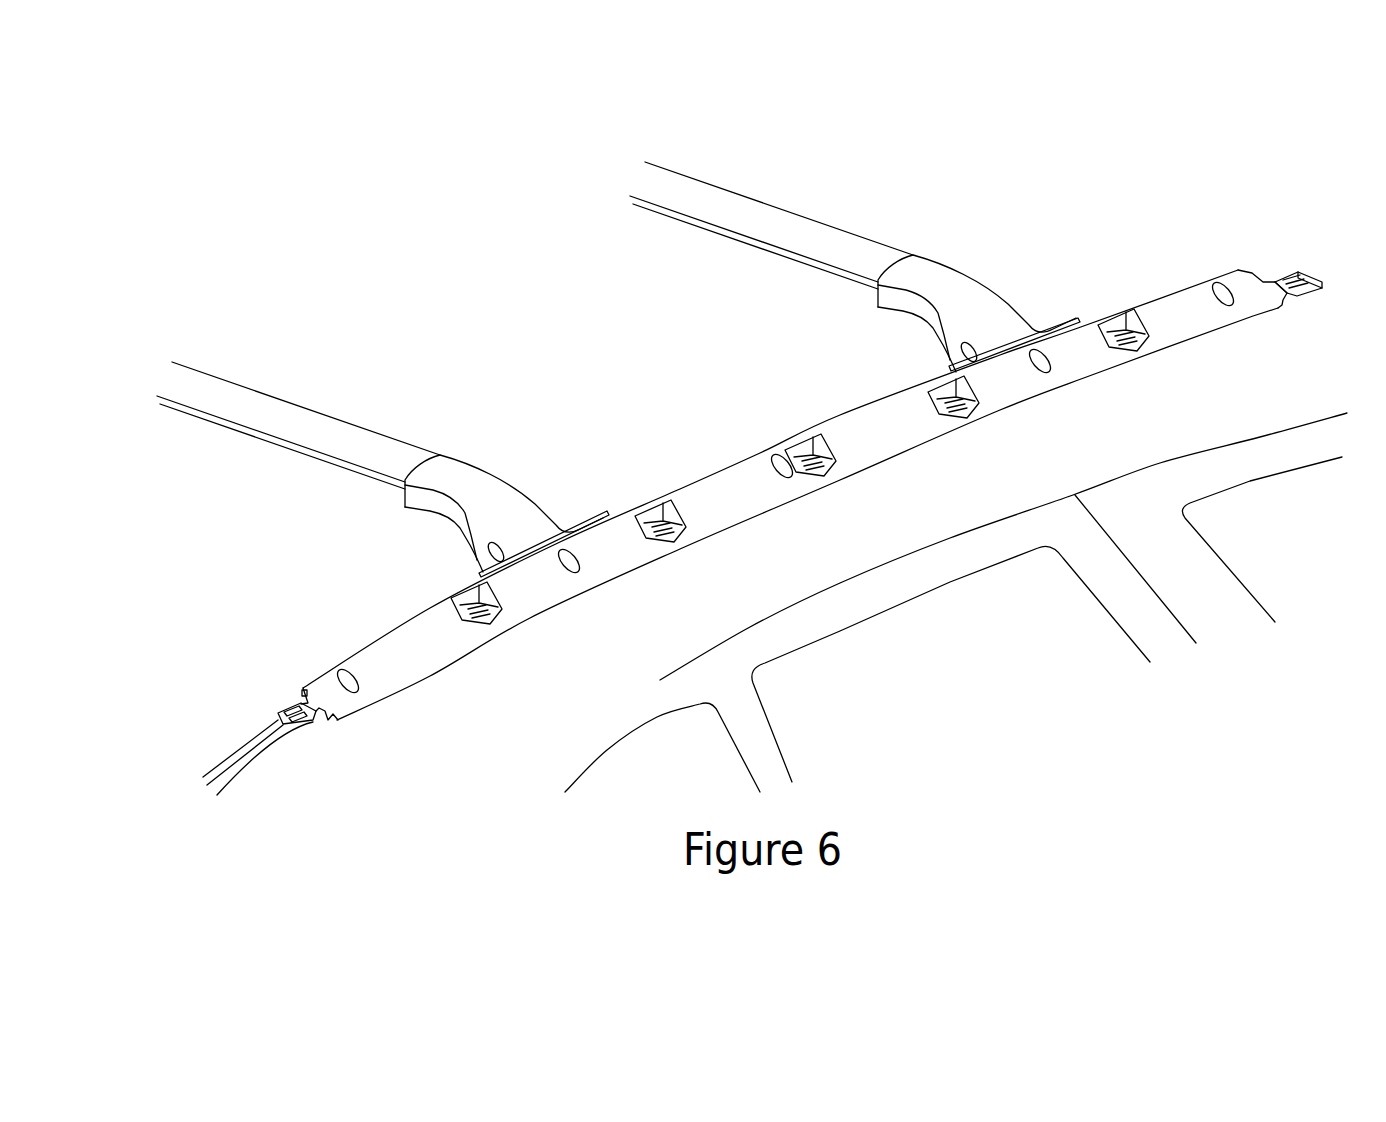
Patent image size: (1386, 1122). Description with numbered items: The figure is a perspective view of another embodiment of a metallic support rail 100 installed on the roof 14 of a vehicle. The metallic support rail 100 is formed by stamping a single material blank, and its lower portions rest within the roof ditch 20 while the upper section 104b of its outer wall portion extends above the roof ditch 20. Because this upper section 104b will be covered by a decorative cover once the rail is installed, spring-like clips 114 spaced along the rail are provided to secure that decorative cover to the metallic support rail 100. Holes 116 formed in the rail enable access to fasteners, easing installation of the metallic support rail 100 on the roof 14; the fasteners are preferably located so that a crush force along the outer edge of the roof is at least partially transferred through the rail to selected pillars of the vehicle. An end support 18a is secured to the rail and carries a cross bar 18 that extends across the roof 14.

The roof 14 is at (535, 328).
The cross bar 18 is at (277, 448).
The end support 18a is at (367, 450).
The roof ditch 20 is at (275, 748).
The metallic support rail 100 is at (800, 455).
The upper section of outer wall portion 104b is at (884, 407).
The spring-like clips 114 is at (690, 521).
The holes 116 is at (1217, 288).